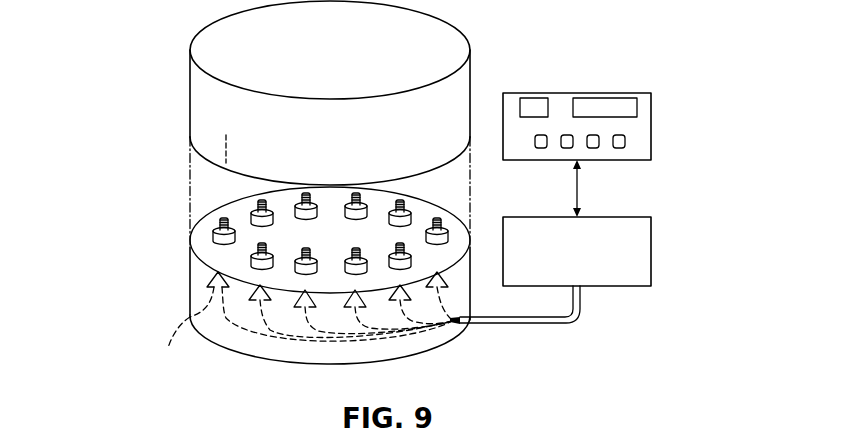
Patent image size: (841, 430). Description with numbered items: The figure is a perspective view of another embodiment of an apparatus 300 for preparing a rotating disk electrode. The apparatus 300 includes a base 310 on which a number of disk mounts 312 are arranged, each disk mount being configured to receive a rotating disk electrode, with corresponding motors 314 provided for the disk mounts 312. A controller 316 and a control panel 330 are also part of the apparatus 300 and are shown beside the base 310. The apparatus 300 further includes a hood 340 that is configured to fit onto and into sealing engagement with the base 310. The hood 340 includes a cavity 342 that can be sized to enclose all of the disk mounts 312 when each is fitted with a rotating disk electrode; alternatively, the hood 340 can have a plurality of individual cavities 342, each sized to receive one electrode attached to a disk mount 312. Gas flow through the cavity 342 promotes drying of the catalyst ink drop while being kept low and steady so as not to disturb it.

The apparatus 300 is at (110, 66).
The hood 340 is at (435, 50).
The cavity 342 is at (225, 161).
The base 310 is at (190, 257).
The disk mounts 312 is at (213, 236).
The motors 314 is at (306, 322).
The controller 316 is at (635, 255).
The control panel 330 is at (635, 132).